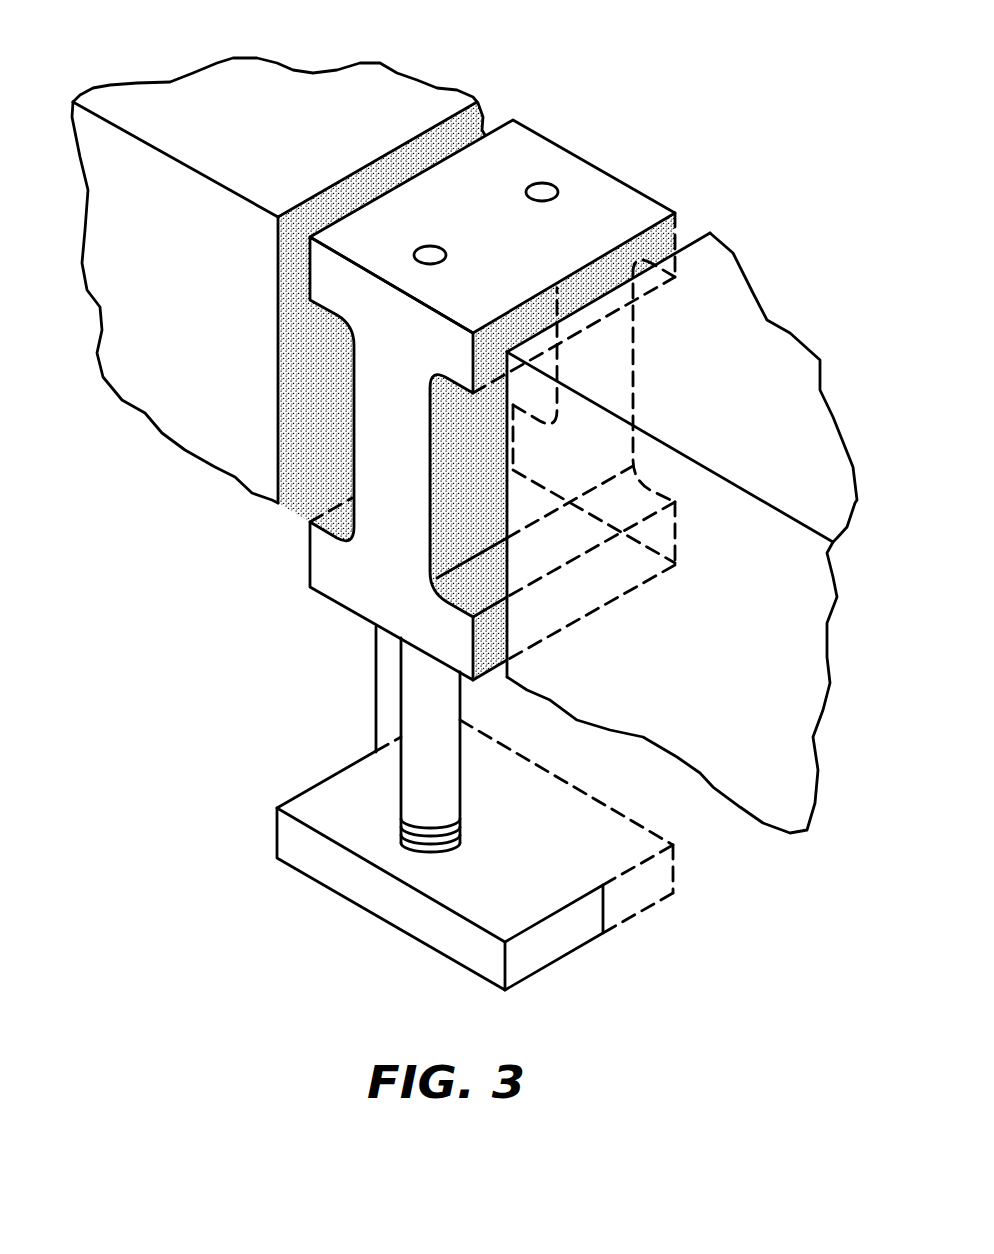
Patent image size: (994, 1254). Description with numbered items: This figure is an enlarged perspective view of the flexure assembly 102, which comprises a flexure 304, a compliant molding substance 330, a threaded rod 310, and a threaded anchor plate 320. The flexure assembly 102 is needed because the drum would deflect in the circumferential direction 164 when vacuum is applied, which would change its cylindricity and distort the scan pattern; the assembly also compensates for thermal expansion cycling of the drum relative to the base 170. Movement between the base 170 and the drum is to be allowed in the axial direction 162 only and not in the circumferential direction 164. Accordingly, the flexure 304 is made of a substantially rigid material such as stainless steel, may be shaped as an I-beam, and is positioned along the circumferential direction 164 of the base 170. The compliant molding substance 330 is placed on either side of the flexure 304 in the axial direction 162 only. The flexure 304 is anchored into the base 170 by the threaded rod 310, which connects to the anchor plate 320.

The flexure assembly 102 is at (646, 90).
The axial direction 162 is at (259, 140).
The circumferential direction 164 is at (287, 177).
The base 170 is at (262, 186).
The flexure 304 is at (600, 200).
The threaded rod 310 is at (417, 730).
The threaded anchor plate 320 is at (345, 795).
The compliant molding substance 330 is at (296, 407).